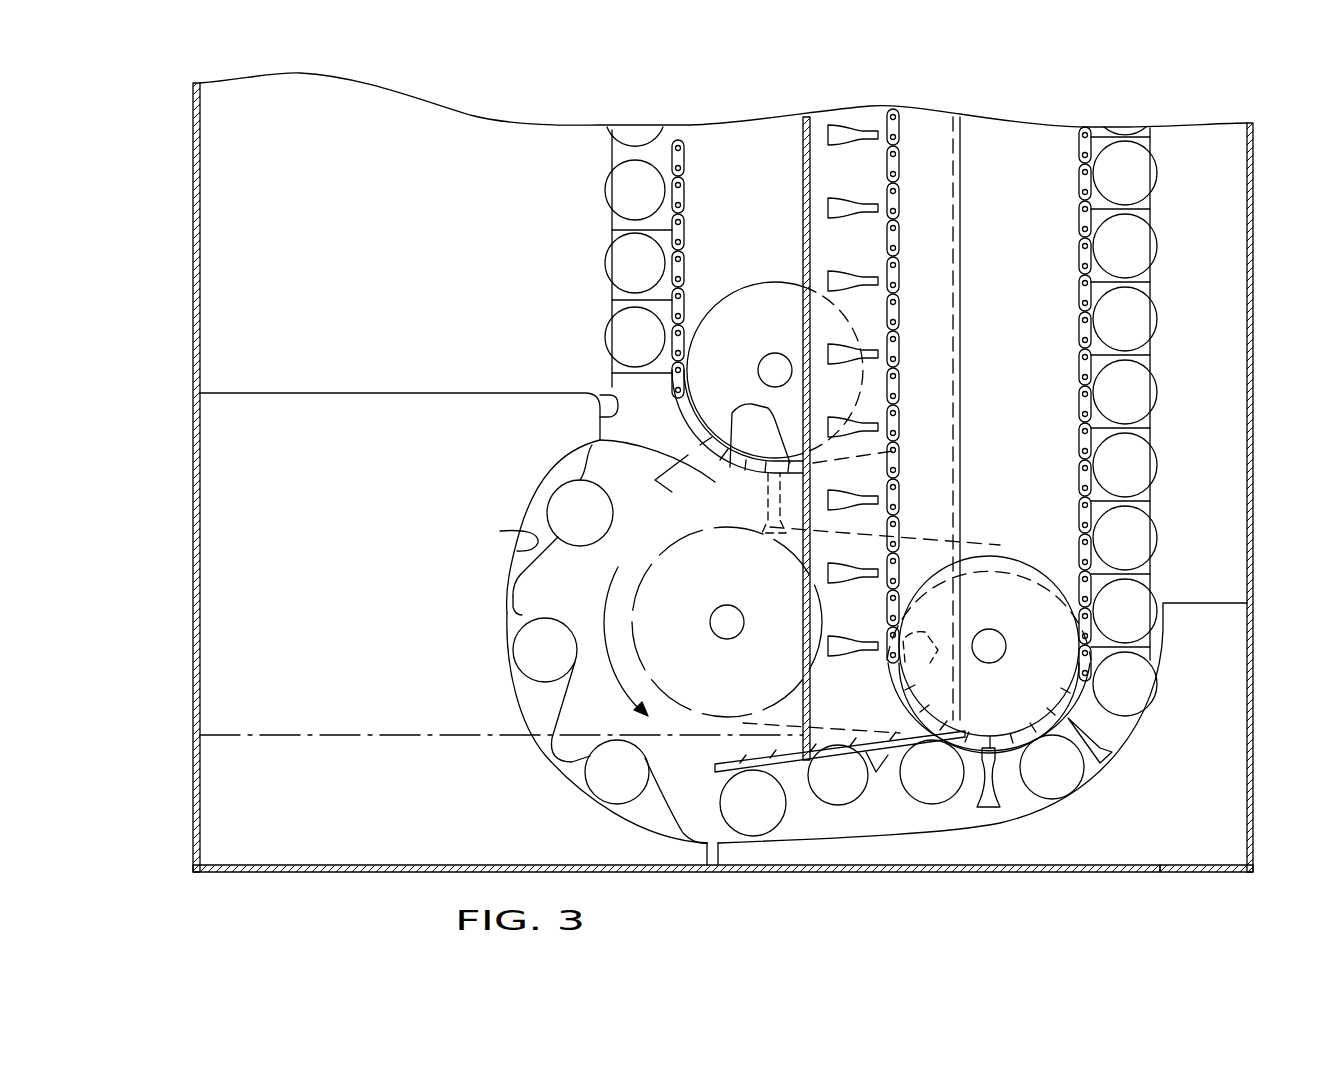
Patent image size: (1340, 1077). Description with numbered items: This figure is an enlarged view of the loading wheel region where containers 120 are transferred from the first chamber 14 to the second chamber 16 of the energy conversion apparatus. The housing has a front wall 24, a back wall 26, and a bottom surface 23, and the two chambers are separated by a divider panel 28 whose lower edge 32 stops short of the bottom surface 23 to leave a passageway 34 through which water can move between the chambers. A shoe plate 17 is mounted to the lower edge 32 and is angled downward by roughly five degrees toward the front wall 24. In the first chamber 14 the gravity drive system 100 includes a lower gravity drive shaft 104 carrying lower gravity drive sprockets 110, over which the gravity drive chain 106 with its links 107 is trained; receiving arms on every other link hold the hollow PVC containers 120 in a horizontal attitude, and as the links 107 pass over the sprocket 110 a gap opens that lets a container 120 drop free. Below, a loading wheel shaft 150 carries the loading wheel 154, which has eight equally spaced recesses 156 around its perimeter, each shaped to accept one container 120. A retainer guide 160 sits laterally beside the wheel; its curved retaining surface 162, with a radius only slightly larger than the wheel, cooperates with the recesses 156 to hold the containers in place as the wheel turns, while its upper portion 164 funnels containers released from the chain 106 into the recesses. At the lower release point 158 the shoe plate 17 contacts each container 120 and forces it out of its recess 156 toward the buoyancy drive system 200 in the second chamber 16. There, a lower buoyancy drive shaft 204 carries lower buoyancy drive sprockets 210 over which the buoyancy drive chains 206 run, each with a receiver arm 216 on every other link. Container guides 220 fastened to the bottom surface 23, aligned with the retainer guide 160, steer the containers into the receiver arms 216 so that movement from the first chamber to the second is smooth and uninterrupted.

The first chamber 14 is at (310, 153).
The second chamber 16 is at (1203, 168).
The shoe plate 17 is at (740, 762).
The bottom surface 23 is at (390, 877).
The front wall 24 is at (193, 256).
The back wall 26 is at (1255, 420).
The divider panel 28 is at (713, 622).
The lower edge 32 is at (833, 808).
The passageway 34 is at (793, 807).
The gravity drive system 100 is at (666, 306).
The lower gravity drive shaft 104 is at (770, 367).
The gravity drive chain 106 is at (672, 158).
The link 107 is at (688, 193).
The lower gravity drive sprocket 110 is at (753, 307).
The container 120 is at (537, 652).
The loading wheel shaft 150 is at (617, 652).
The loading wheel 154 is at (587, 712).
The recess 156 is at (608, 532).
The lower release point 158 is at (923, 773).
The retainer guide 160 is at (292, 413).
The curved retaining surface 162 is at (513, 550).
The upper portion 164 is at (600, 393).
The buoyancy drive system 200 is at (1029, 476).
The lower buoyancy drive shaft 204 is at (992, 633).
The buoyancy drive chain 206 is at (1078, 207).
The lower buoyancy drive sprocket 210 is at (978, 580).
The receiver arm 216 is at (1115, 762).
The container guide 220 is at (1188, 835).